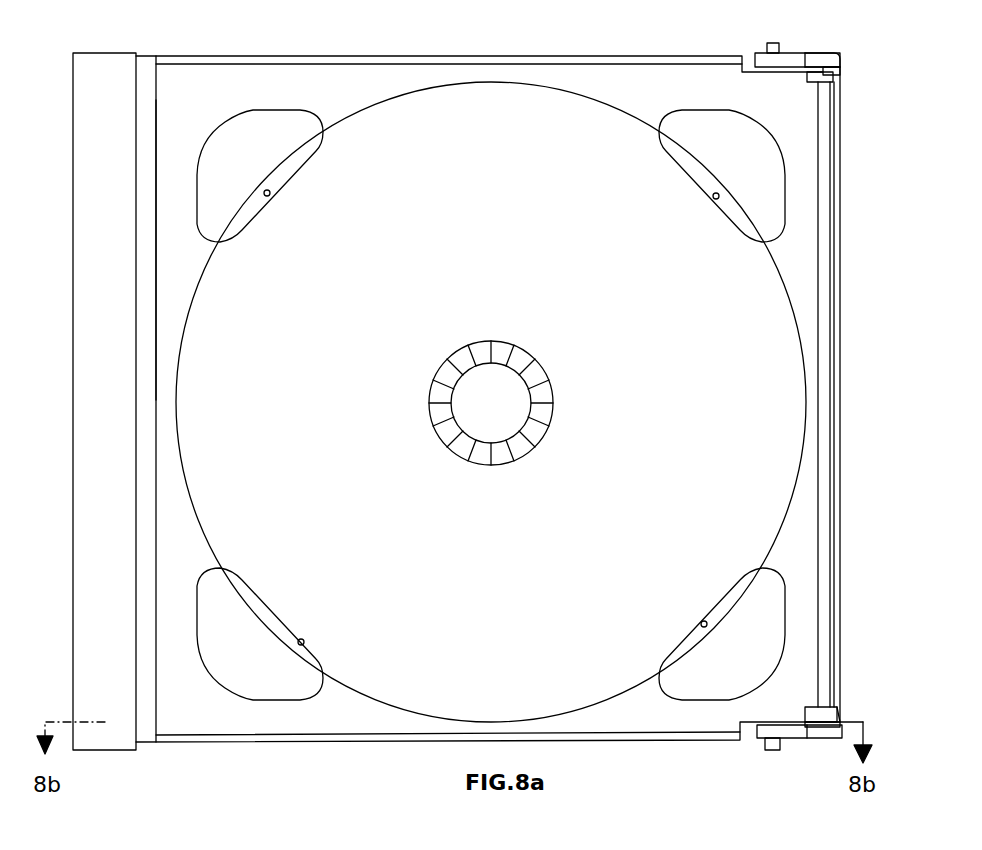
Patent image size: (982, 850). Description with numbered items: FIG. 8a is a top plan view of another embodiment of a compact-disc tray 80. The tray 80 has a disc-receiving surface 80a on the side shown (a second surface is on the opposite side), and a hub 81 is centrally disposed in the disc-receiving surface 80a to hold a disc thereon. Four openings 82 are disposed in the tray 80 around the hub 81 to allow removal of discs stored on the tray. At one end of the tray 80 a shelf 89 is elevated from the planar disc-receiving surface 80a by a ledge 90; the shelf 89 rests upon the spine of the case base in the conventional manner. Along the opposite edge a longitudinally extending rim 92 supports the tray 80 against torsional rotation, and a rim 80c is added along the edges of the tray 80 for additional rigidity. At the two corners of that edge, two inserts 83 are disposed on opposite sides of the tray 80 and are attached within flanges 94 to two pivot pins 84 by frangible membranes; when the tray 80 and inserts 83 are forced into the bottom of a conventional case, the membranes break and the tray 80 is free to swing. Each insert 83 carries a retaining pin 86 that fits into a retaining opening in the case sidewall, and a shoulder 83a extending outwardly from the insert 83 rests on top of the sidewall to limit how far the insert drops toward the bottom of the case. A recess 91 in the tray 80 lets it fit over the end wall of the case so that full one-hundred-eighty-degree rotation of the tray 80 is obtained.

The tray 80 is at (645, 32).
The disc-receiving surface 80a is at (542, 85).
The rim 80c is at (447, 57).
The hub 81 is at (553, 403).
The openings 82 is at (269, 196).
The inserts 83 is at (757, 58).
The shoulder 83a is at (823, 62).
The pivot pin 84 is at (840, 72).
The retaining pin 86 is at (790, 27).
The shelf 89 is at (108, 58).
The ledge 90 is at (156, 131).
The recess 91 is at (826, 605).
The longitudinally extending rim 92 is at (842, 530).
The flanges 94 is at (810, 79).